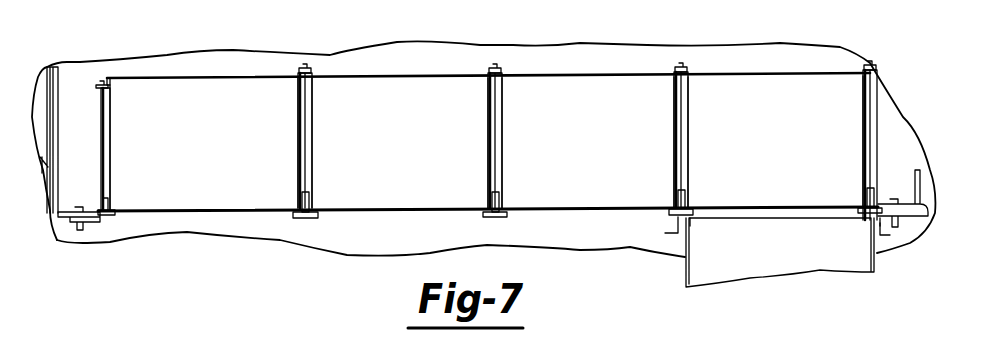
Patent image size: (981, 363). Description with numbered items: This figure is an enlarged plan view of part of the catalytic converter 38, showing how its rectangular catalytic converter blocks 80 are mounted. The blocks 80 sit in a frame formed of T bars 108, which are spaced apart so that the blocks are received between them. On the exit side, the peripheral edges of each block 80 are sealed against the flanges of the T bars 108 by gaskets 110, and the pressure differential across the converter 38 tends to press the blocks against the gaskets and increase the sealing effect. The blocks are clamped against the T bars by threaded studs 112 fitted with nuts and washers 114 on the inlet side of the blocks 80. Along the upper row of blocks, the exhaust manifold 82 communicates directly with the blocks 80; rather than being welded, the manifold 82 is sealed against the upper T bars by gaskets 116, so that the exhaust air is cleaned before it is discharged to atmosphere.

The catalytic converter 38 is at (440, 74).
The catalytic converter block 80 is at (235, 93).
The manifold 82 is at (760, 270).
The T bar 108 is at (303, 219).
The gasket 110 is at (113, 215).
The threaded stud 112 is at (103, 132).
The nuts and washers 114 is at (494, 70).
The gasket 116 is at (690, 221).